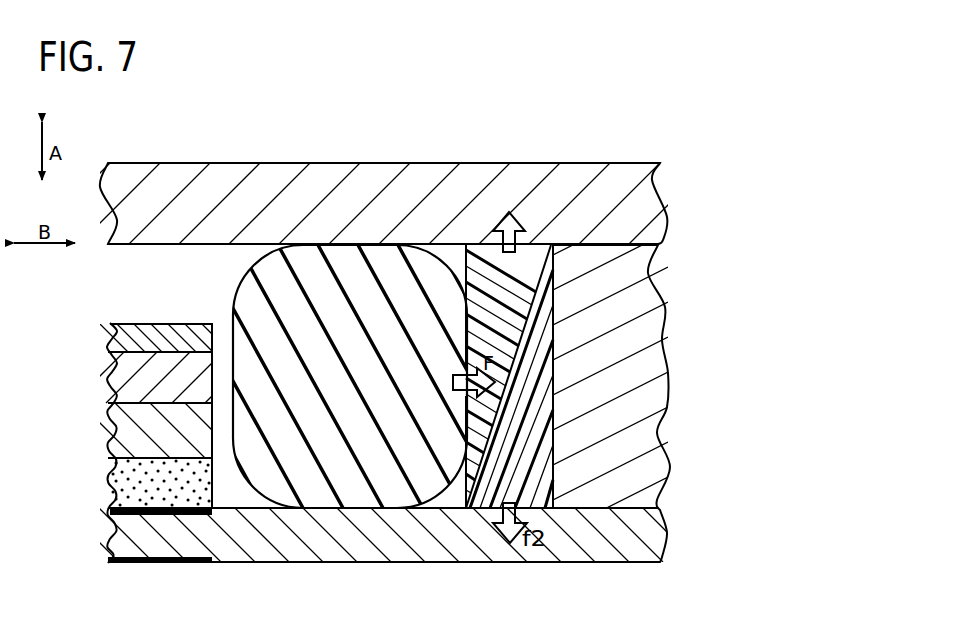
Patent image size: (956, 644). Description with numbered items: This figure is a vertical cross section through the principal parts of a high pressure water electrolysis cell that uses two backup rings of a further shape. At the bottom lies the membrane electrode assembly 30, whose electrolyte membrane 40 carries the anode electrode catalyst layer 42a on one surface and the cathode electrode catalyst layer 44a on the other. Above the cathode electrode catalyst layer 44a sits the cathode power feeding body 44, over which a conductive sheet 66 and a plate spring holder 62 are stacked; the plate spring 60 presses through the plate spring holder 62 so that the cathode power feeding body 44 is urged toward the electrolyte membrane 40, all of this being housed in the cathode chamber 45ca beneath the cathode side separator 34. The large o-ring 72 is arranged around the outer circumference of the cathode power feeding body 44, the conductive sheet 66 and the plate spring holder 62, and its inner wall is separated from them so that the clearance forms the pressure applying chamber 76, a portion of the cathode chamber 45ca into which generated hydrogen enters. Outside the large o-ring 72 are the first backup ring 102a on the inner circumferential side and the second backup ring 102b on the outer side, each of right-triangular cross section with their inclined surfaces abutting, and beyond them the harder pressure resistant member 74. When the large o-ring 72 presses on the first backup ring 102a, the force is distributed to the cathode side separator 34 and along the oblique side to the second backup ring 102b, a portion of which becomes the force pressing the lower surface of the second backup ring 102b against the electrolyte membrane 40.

The cathode side separator 34 is at (626, 161).
The pressure resistant member 74 is at (648, 328).
The membrane electrode assembly 30 is at (646, 540).
The electrolyte membrane 40 is at (133, 535).
The cathode electrode catalyst layer 44a is at (133, 510).
The anode electrode catalyst layer 42a is at (133, 563).
The plate spring 60 is at (133, 340).
The plate spring holder 62 is at (133, 378).
The conductive sheet 66 is at (133, 430).
The cathode power feeding body 44 is at (133, 482).
The pressure applying chamber 76 is at (229, 496).
The large o-ring 72 is at (355, 280).
The cathode chamber 45ca is at (227, 268).
The first backup ring 102a is at (490, 278).
The second backup ring 102b is at (523, 448).